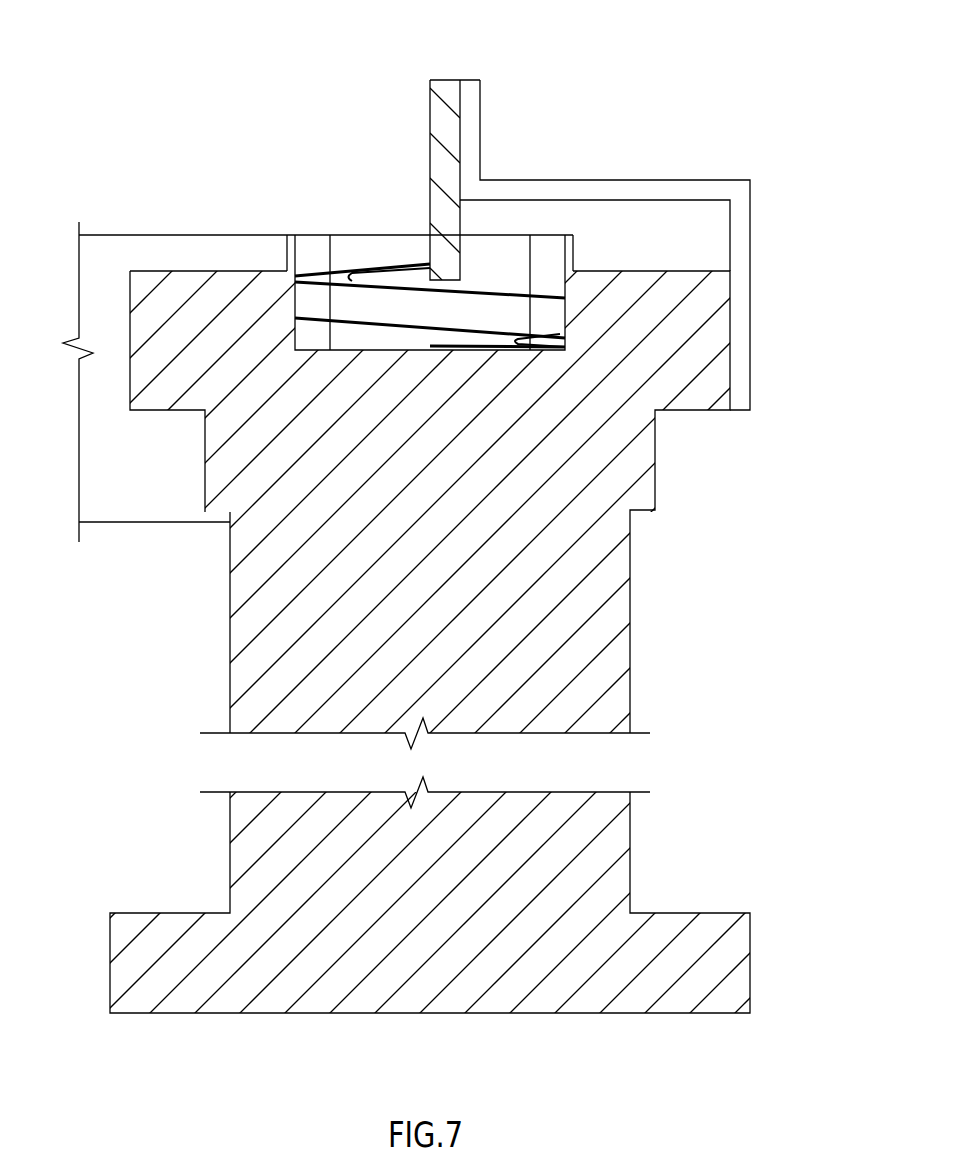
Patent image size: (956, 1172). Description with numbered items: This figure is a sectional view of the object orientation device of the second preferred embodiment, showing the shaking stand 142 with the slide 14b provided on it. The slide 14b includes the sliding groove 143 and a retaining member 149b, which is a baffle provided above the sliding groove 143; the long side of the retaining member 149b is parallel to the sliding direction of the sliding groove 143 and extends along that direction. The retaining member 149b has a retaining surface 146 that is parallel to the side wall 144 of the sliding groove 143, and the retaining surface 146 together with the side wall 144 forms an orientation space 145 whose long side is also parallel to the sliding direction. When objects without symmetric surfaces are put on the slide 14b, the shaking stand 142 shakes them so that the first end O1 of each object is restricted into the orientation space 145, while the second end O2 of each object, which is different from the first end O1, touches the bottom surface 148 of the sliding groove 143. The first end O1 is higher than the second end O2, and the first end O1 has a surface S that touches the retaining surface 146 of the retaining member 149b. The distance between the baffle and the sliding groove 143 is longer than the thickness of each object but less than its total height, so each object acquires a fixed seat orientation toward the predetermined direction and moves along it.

The slide 14b is at (178, 168).
The shaking stand 142 is at (478, 586).
The sliding groove 143 is at (478, 586).
The side wall 144 is at (296, 302).
The orientation space 145 is at (388, 220).
The retaining surface 146 is at (430, 138).
The bottom surface 148 is at (485, 225).
The retaining member 149b is at (445, 93).
The first end O1 is at (240, 273).
The second end O2 is at (601, 400).
The surface S is at (558, 405).